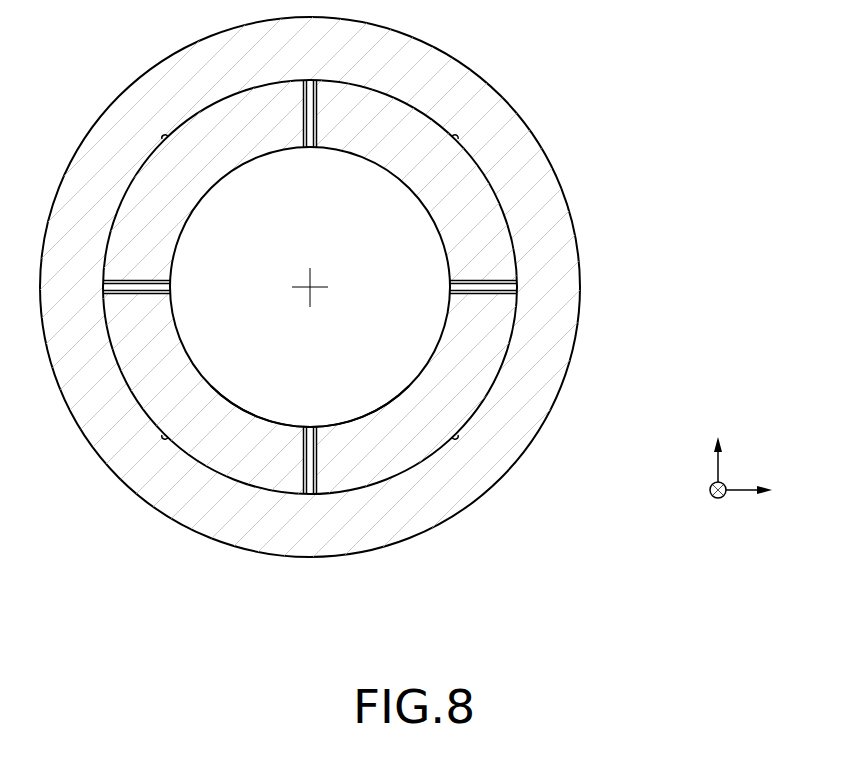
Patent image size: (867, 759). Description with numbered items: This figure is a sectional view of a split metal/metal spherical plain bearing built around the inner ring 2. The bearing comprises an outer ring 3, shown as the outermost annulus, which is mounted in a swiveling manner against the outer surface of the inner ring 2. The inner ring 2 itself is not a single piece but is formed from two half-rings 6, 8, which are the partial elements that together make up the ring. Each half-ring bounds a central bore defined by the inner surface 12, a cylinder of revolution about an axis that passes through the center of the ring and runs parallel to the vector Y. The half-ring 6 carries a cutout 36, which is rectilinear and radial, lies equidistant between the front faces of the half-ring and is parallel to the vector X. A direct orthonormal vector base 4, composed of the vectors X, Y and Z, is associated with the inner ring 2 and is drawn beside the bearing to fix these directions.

The inner ring 2 is at (210, 247).
The outer ring 3 is at (523, 143).
The direct orthonormal vector base 4 is at (782, 425).
The half-ring 6 is at (190, 173).
The half-ring 8 is at (423, 183).
The inner surface 12 is at (228, 400).
The cutout 36 is at (160, 288).